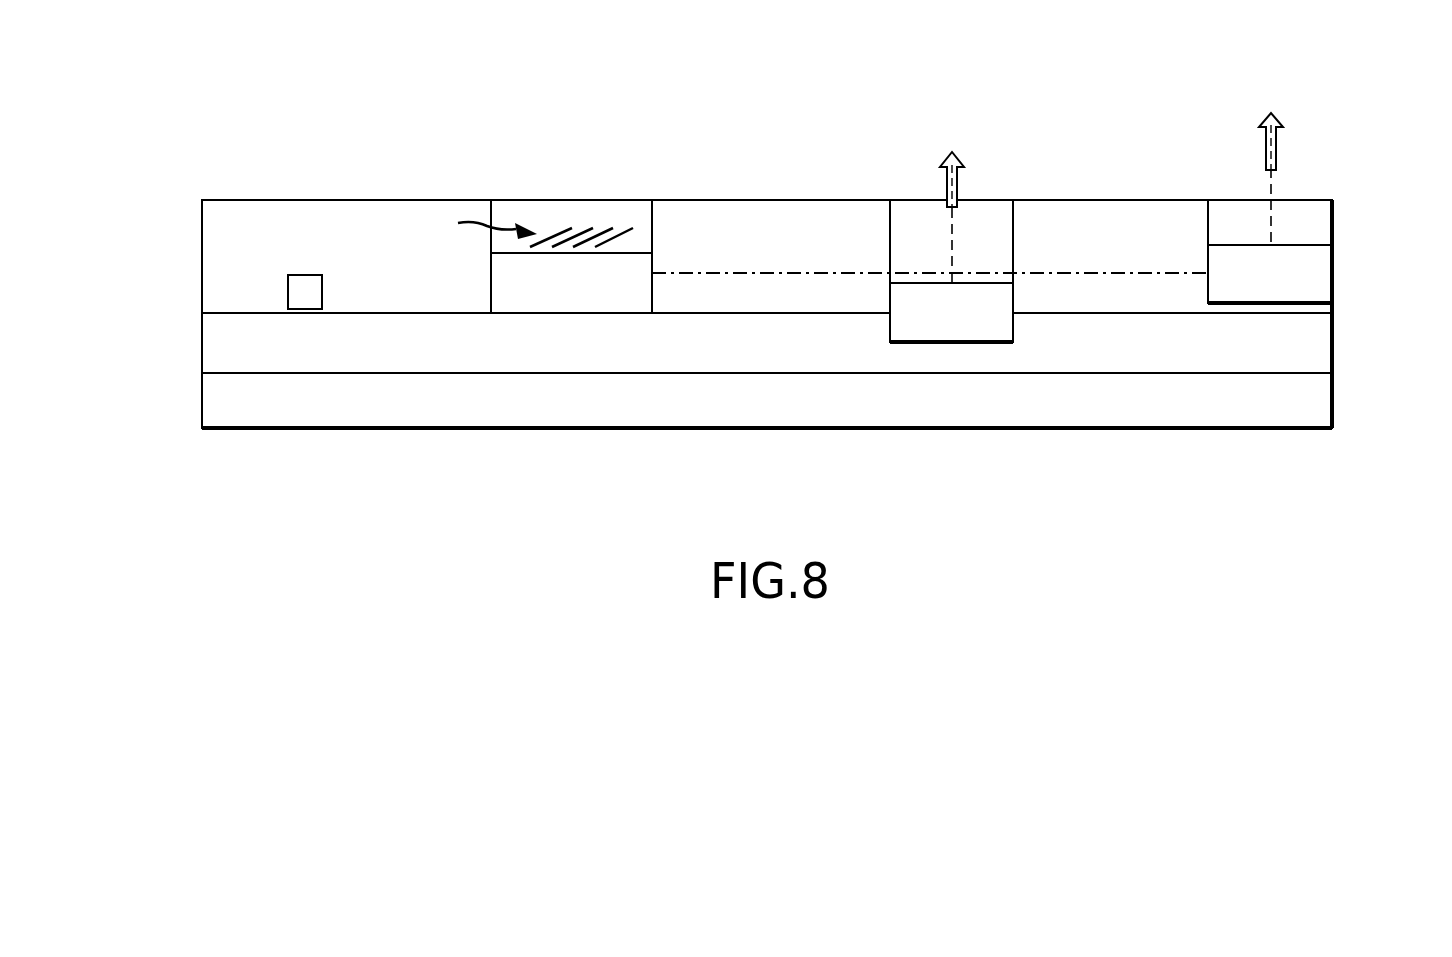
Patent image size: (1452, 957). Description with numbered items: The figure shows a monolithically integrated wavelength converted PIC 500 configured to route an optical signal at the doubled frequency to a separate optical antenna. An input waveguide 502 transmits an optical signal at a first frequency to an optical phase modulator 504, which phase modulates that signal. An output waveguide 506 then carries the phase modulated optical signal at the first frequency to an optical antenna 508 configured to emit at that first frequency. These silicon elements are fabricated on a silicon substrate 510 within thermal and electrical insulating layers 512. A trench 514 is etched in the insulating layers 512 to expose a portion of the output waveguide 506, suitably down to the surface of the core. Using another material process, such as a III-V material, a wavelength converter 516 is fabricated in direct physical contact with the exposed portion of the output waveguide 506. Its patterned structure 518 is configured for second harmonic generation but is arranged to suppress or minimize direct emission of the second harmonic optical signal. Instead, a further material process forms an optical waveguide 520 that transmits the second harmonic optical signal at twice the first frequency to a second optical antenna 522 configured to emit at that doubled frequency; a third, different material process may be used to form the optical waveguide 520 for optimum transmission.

The wavelength converted PIC 500 is at (394, 92).
The input waveguide 502 is at (252, 313).
The optical phase modulator 504 is at (305, 275).
The output waveguide 506 is at (573, 313).
The optical antenna 508 is at (1015, 330).
The silicon substrate 510 is at (1335, 397).
The thermal and electrical insulating layers 512 is at (1218, 358).
The trench 514 is at (638, 225).
The wavelength converter 516 is at (491, 282).
The patterned structure 518 is at (477, 223).
The optical waveguide 520 is at (820, 273).
The optical antenna 522 is at (1208, 253).